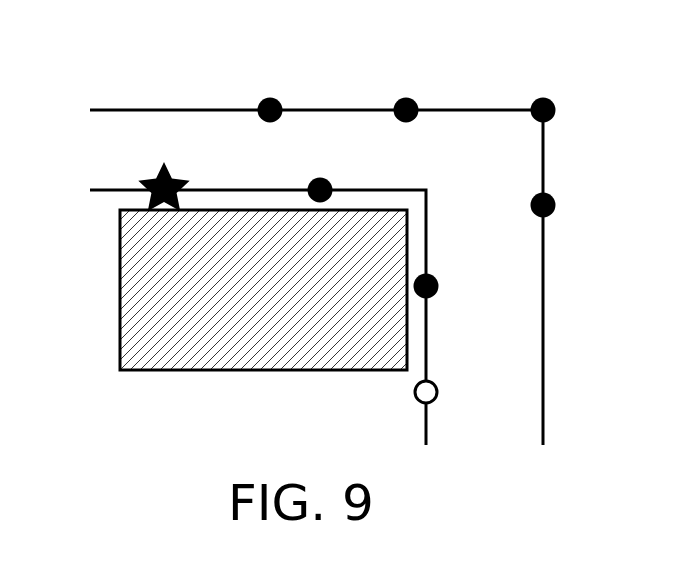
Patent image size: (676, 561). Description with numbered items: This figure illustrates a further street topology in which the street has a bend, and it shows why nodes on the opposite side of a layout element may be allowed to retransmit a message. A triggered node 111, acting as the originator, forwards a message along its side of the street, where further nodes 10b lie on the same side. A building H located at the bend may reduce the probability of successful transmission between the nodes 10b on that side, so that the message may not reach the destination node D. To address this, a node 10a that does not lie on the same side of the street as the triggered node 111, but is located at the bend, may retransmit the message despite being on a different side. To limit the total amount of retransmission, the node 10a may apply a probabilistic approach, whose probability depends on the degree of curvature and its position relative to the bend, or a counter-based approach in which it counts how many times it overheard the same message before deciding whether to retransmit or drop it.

The node 10a is at (543, 97).
The nodes 10b is at (320, 178).
The triggered node 111 is at (158, 172).
The building H is at (120, 314).
The destination node D is at (437, 393).